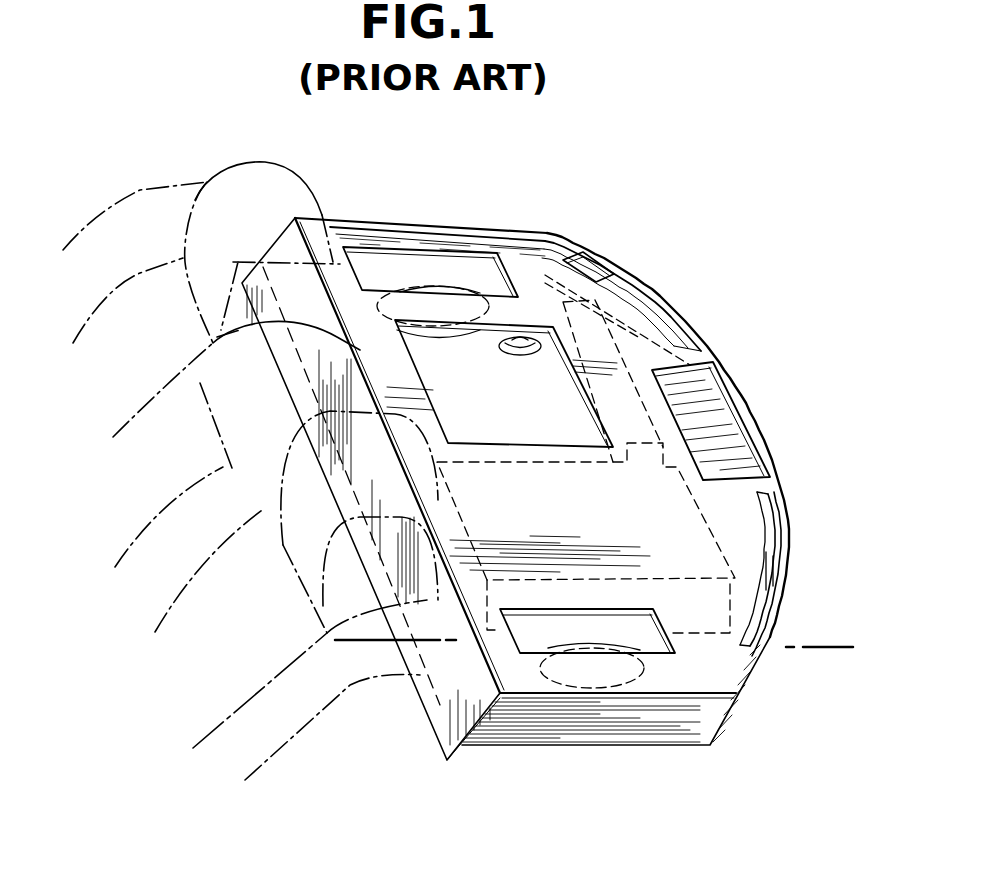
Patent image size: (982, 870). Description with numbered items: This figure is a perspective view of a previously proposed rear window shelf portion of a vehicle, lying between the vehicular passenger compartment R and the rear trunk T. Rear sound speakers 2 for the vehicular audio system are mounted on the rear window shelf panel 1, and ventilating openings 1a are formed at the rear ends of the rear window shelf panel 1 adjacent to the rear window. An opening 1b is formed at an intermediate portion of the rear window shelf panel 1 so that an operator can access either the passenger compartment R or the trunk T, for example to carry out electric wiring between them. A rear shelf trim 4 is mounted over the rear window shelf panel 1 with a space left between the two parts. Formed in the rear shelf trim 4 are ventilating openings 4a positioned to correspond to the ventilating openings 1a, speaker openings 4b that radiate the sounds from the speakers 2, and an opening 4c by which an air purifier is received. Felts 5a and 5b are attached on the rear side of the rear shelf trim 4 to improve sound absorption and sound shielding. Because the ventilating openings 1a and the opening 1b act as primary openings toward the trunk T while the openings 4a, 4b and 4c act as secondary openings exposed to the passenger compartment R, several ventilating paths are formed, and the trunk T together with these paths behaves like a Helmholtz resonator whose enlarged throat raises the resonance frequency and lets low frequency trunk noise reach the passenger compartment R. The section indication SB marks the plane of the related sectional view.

The rear window shelf panel 1 is at (707, 745).
The ventilating openings 1a is at (672, 352).
The opening 1b is at (520, 340).
The rear sound speakers 2 is at (442, 292).
The rear shelf trim 4 is at (367, 232).
The ventilating openings 4a is at (610, 270).
The speaker openings 4b is at (407, 256).
The opening 4c is at (590, 420).
The felt 5a is at (717, 568).
The felt 5b is at (618, 348).
The vehicular passenger compartment R is at (86, 438).
The rear trunk T is at (790, 814).
The section line SB is at (348, 642).